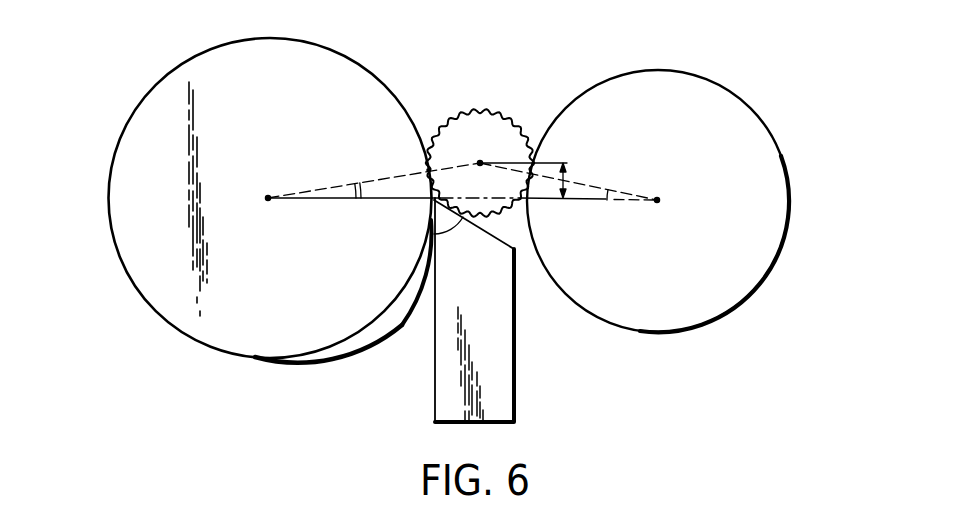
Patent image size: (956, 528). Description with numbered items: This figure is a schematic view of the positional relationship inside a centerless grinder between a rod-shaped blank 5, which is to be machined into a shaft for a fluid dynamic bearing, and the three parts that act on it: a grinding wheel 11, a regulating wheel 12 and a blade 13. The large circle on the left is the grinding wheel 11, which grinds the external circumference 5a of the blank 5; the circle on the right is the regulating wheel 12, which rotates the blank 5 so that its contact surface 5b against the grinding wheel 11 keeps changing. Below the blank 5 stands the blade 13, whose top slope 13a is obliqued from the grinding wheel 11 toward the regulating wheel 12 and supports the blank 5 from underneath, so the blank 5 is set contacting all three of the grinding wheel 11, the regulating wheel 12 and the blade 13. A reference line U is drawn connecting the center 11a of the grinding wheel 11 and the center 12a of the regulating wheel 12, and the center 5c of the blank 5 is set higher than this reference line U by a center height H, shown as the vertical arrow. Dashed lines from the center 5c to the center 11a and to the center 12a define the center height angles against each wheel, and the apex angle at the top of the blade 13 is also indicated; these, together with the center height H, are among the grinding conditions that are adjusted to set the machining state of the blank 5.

The blank 5 is at (480, 118).
The external circumference 5a is at (447, 123).
The contact surface 5b is at (427, 170).
The center 5c is at (482, 161).
The grinding wheel 11 is at (141, 121).
The center 11a is at (268, 196).
The regulating wheel 12 is at (728, 105).
The center 12a is at (661, 196).
The blade 13 is at (507, 396).
The top slope 13a is at (497, 237).
The center height H is at (565, 180).
The reference line U is at (310, 200).